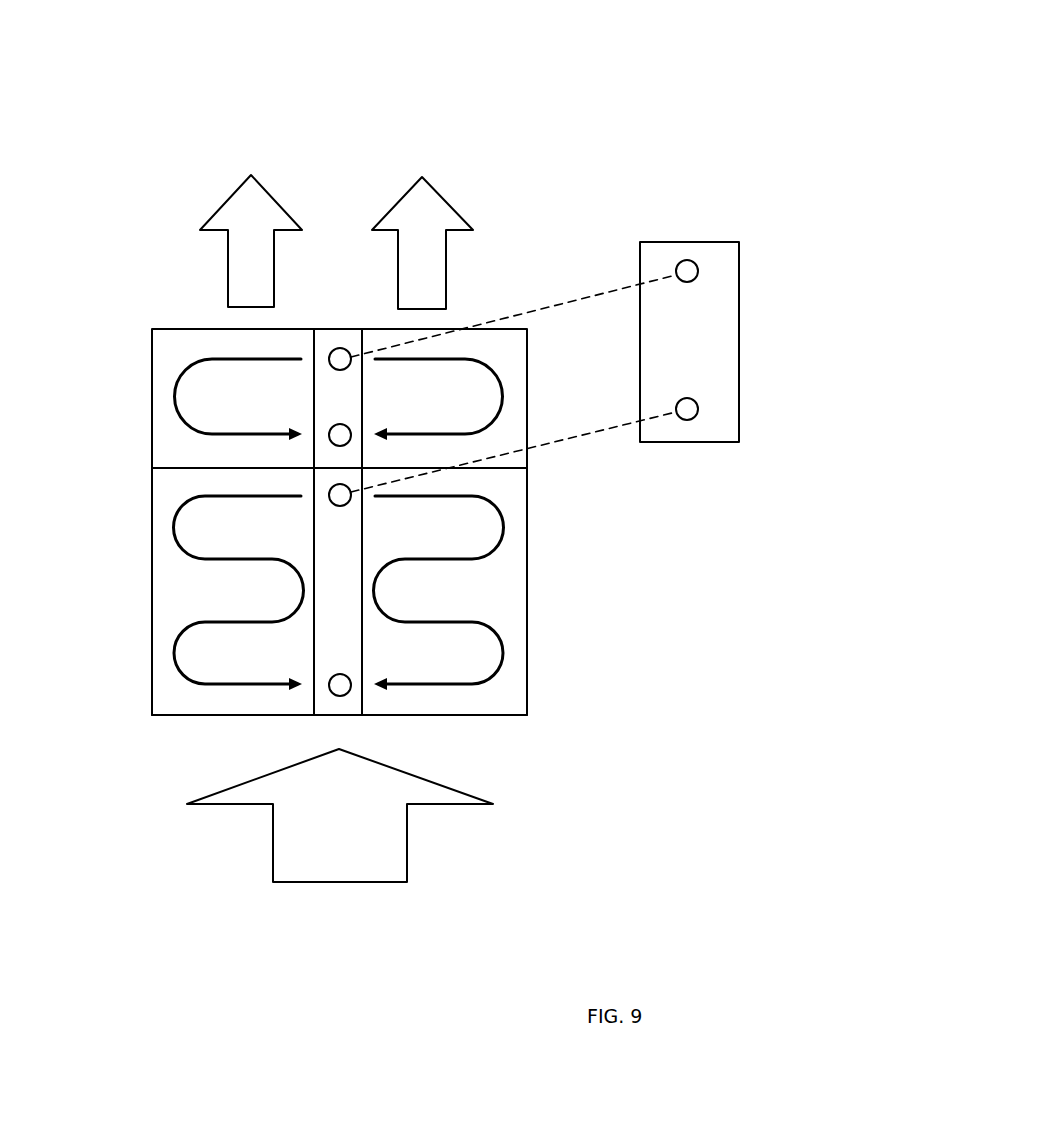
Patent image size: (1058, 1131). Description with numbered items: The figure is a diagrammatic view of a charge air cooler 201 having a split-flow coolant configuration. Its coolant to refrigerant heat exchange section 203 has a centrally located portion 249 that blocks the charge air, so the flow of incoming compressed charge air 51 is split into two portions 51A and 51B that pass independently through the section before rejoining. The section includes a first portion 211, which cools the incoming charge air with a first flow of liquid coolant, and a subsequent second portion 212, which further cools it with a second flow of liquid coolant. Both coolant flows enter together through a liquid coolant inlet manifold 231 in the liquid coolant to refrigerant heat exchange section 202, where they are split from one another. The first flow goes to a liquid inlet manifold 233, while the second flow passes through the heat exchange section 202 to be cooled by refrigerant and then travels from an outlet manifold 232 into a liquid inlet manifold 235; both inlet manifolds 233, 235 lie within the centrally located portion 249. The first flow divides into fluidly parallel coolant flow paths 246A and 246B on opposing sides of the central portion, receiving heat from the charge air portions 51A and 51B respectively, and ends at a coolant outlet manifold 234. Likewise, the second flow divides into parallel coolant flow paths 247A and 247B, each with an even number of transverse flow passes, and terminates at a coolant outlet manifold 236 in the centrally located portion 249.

The charge air cooler 201 is at (622, 130).
The liquid coolant to refrigerant heat exchange section 202 is at (736, 330).
The coolant to refrigerant heat exchange section 203 is at (570, 523).
The first portion 211 is at (512, 605).
The second portion 212 is at (162, 435).
The liquid coolant inlet manifold 231 is at (692, 420).
The outlet manifold 232 is at (684, 260).
The liquid inlet manifold 233 is at (340, 506).
The coolant outlet manifold 234 is at (340, 674).
The liquid inlet manifold 235 is at (338, 348).
The coolant outlet manifold 236 is at (338, 424).
The coolant flow path 246A is at (178, 640).
The coolant flow path 246B is at (495, 675).
The coolant flow path 247A is at (188, 365).
The coolant flow path 247B is at (500, 382).
The centrally located portion 249 is at (323, 706).
The incoming compressed charge air 51 is at (371, 869).
The charge air portion 51A is at (258, 200).
The charge air portion 51B is at (445, 212).